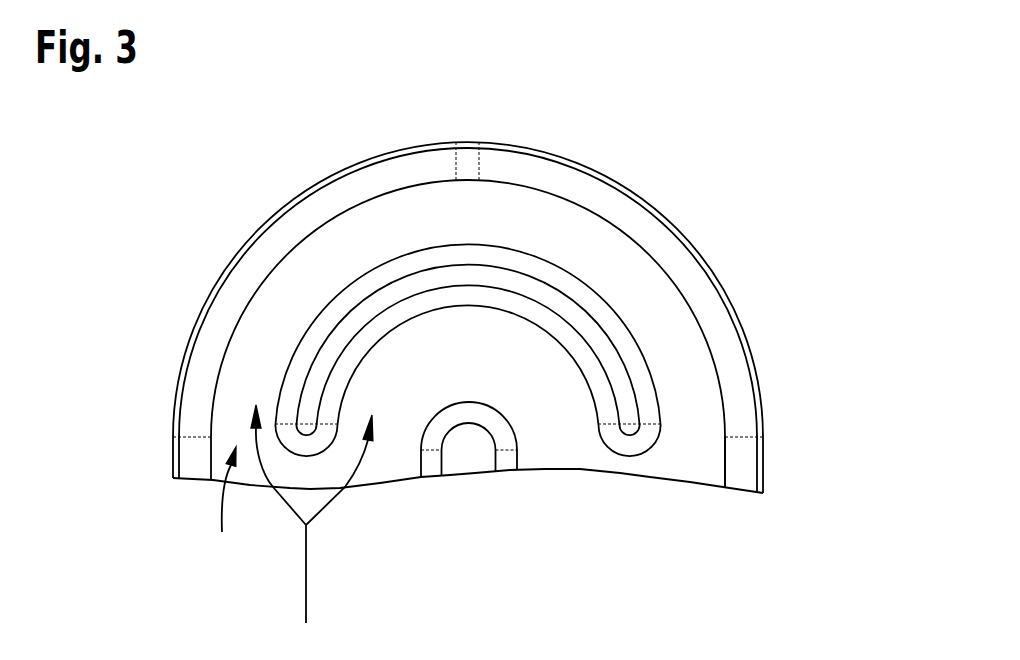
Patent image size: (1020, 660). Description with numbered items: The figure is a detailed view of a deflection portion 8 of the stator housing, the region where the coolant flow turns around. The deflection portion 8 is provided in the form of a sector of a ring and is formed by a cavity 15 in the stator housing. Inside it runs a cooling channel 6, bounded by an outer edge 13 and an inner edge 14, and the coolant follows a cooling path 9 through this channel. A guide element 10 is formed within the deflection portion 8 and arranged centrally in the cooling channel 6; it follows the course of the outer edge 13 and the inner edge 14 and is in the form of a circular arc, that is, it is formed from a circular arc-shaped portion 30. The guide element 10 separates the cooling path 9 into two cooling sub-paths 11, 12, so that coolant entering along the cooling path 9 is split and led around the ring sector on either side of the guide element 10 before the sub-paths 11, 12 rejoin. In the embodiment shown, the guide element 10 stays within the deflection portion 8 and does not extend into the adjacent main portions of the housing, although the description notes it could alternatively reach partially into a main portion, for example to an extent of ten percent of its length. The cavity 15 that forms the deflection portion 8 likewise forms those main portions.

The cooling channel 6 is at (222, 508).
The deflection portion 8 is at (738, 194).
The cooling path 9 is at (306, 597).
The guide element 10 is at (515, 282).
The cooling sub-path 11 is at (285, 507).
The cooling sub-path 12 is at (335, 505).
The outer edge 13 is at (323, 158).
The inner edge 14 is at (510, 428).
The cavity 15 is at (706, 411).
The circular arc-shaped portion 30 is at (600, 337).